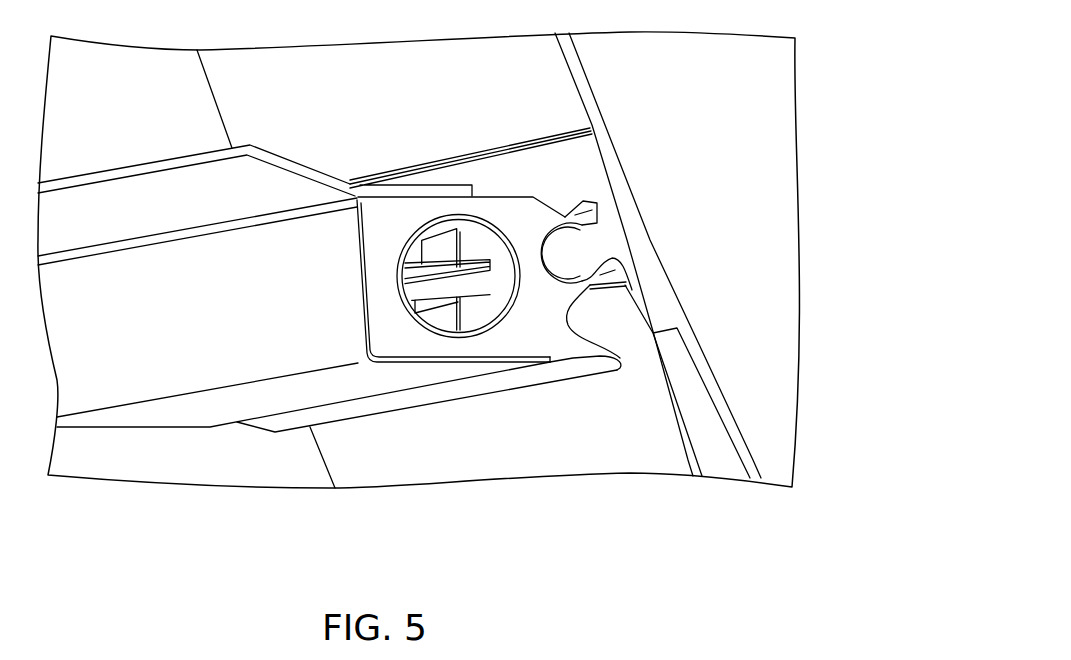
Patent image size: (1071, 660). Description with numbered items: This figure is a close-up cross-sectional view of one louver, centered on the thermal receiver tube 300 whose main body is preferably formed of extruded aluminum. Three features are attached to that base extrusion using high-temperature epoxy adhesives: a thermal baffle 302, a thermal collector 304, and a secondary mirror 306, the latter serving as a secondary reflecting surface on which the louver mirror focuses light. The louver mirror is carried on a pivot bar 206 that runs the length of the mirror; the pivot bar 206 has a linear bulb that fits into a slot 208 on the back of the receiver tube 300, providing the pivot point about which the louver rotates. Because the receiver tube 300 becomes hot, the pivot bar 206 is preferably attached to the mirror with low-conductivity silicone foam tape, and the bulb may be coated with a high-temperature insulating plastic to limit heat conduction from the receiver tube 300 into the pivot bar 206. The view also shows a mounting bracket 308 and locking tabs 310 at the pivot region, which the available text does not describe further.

The pivot bar 206 is at (613, 240).
The slot 208 is at (582, 284).
The thermal receiver tube 300 is at (563, 216).
The thermal baffle 302 is at (185, 177).
The thermal collector 304 is at (155, 416).
The secondary mirror 306 is at (276, 423).
The mounting bracket 308 is at (442, 336).
The locking tabs 310 is at (468, 247).